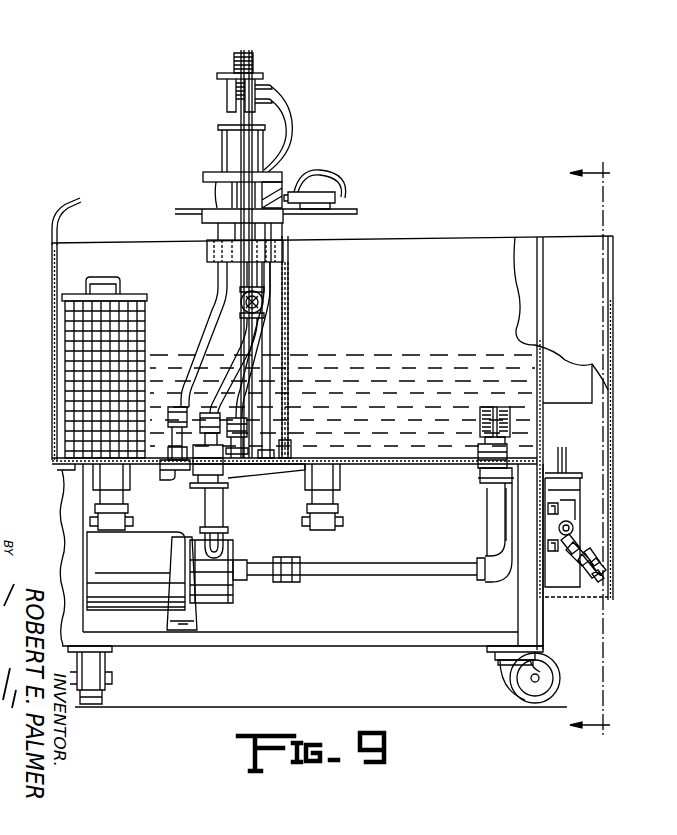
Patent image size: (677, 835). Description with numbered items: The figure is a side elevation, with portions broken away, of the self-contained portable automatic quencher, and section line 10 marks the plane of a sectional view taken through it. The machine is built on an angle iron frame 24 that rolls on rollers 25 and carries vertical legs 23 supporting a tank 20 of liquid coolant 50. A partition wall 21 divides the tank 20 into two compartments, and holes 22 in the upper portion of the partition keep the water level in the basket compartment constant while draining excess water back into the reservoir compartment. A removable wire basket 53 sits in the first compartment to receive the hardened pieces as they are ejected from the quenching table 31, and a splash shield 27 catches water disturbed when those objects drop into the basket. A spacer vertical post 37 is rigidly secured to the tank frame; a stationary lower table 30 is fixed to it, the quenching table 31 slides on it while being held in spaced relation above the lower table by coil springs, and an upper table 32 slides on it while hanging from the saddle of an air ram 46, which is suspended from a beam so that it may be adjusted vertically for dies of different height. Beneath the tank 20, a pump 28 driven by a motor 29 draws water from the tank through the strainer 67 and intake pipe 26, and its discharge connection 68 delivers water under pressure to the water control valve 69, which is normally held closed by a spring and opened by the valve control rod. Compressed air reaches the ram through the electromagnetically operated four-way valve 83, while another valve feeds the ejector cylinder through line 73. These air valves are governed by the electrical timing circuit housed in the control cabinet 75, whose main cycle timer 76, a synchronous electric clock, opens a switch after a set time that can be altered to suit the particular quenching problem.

The section line 10- 10 is at (590, 455).
The tank 20 is at (398, 240).
The partition wall 21 is at (289, 342).
The holes 22 is at (289, 312).
The vertical legs 23 is at (63, 490).
The angle iron frame 24 is at (288, 647).
The rollers 25 is at (103, 697).
The intake pipe 26 is at (614, 360).
The splash shield 27 is at (62, 211).
The pump 28 is at (222, 598).
The motor 29 is at (148, 534).
The stationary or lower table 30 is at (284, 250).
The quenching table 31 is at (213, 211).
The upper table 32 is at (283, 178).
The spacer vertical post 37 is at (241, 121).
The air ram 46 is at (227, 95).
The liquid 50 is at (376, 355).
The removable wire basket 53 is at (64, 335).
The strainer 67 is at (478, 421).
The pump inlet pipe 68 is at (224, 507).
The water control valve 69 is at (250, 318).
The line 73 is at (326, 190).
The control cabinet 75 is at (556, 404).
The main cycle timer 76 is at (373, 578).
The valve 83 is at (570, 512).